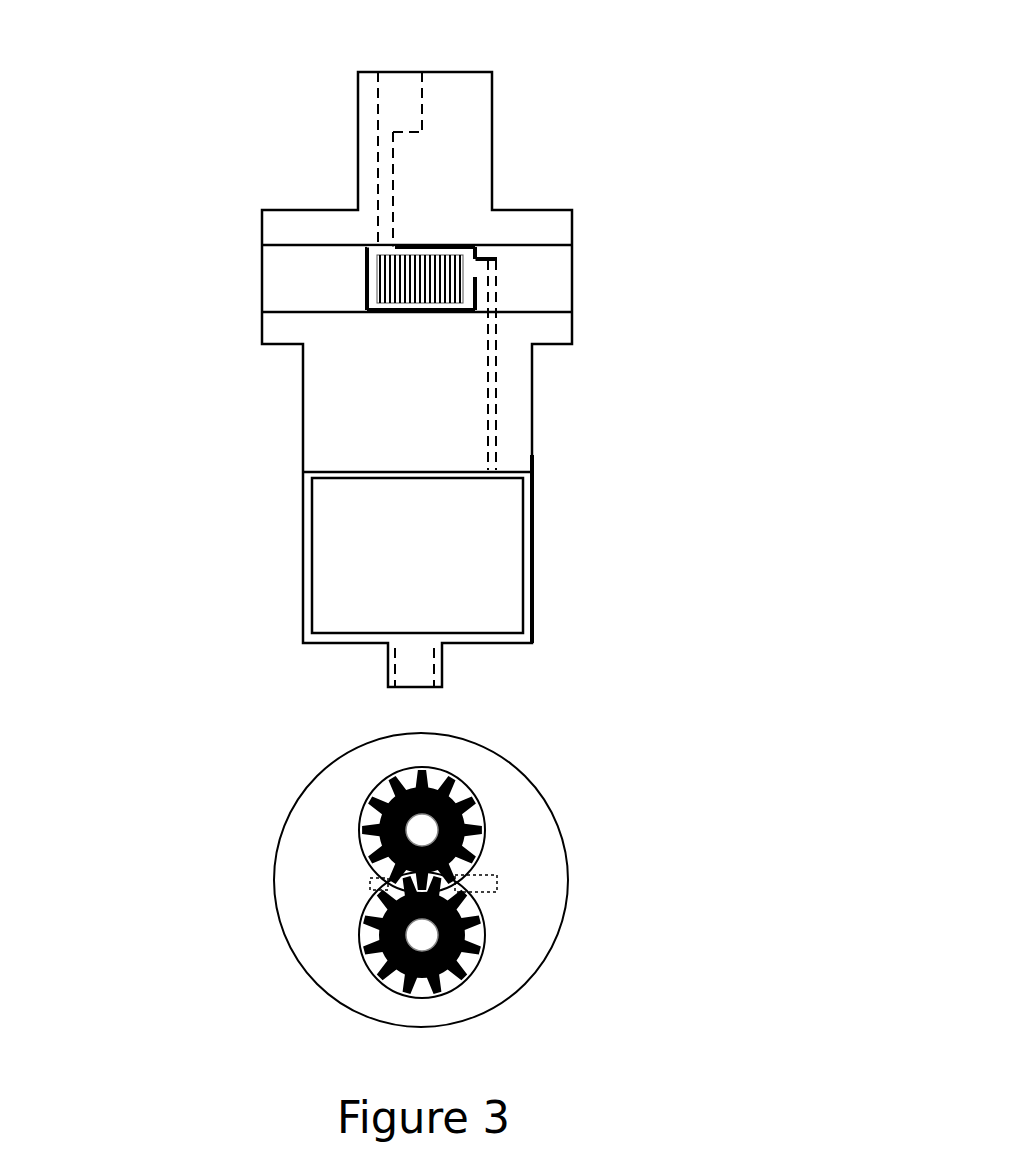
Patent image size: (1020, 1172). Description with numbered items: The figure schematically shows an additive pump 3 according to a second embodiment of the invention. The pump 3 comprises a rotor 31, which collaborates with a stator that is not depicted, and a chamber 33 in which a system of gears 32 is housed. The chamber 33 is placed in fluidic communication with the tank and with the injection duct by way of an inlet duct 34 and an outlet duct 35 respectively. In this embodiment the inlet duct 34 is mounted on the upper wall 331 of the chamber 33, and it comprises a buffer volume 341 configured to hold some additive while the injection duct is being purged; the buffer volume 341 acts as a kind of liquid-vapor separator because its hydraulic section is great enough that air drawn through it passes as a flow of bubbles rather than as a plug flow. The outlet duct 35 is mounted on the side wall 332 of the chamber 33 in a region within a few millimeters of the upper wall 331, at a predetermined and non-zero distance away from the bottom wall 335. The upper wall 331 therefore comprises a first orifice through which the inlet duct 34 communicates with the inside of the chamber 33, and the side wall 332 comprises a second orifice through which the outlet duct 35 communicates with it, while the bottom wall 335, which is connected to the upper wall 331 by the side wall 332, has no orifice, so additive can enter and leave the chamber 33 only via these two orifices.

The pump 3 is at (708, 115).
The rotor 31 is at (502, 540).
The system of gears 32 is at (388, 277).
The chamber 33 is at (368, 296).
The inlet duct 34 is at (380, 162).
The buffer volume 341 is at (395, 100).
The outlet duct 35 is at (493, 427).
The upper wall 331 is at (408, 243).
The side wall 332 is at (477, 277).
The bottom wall 335 is at (433, 313).